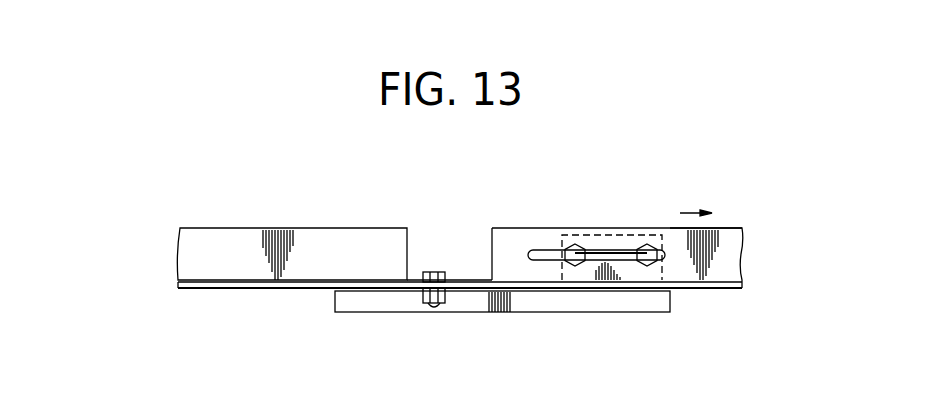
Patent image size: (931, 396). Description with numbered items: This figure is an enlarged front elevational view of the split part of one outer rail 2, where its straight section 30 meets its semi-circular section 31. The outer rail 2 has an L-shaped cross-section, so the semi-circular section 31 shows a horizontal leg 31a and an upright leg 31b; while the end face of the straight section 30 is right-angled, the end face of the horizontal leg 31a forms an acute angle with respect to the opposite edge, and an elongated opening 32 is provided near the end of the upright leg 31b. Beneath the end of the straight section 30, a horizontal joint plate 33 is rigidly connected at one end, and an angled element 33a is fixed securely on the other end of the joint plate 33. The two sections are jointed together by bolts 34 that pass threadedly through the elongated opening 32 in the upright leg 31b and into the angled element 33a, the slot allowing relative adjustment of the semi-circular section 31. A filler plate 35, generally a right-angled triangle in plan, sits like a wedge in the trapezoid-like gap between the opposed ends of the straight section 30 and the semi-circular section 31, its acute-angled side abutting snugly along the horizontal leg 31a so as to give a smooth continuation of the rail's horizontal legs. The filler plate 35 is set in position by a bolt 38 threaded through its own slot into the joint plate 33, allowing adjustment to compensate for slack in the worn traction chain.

The outer rail 2 is at (178, 246).
The straight section 30 is at (330, 228).
The semi-circular section 31 is at (722, 289).
The horizontal leg 31a is at (693, 290).
The upright leg 31b is at (728, 228).
The elongated opening 32 is at (540, 249).
The horizontal joint plate 33 is at (330, 304).
The angled element 33a is at (612, 235).
The bolts 34 is at (575, 244).
The filler plate 35 is at (413, 282).
The bolt 38 is at (443, 273).